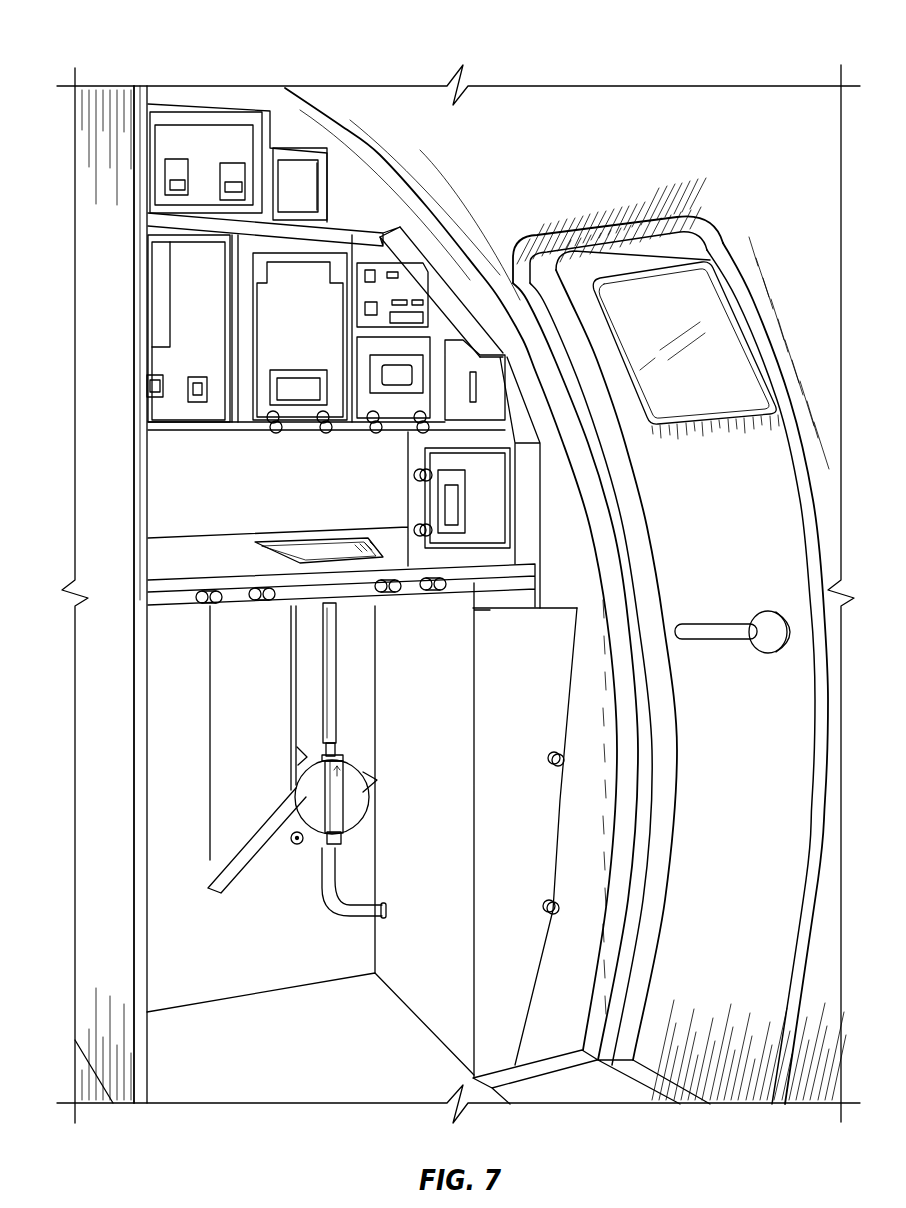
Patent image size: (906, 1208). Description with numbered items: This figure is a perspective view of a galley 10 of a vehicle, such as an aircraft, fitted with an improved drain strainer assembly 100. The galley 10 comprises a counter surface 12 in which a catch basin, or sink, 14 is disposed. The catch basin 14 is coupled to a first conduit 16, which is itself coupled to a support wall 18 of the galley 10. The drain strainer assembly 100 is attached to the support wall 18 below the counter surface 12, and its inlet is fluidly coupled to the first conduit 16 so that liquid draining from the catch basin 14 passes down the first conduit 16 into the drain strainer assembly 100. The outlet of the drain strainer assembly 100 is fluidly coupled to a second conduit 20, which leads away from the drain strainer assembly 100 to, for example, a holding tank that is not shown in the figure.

The galley 10 is at (129, 54).
The counter surface 12 is at (200, 552).
The catch basin 14 is at (303, 547).
The first conduit 16 is at (337, 625).
The support wall 18 is at (250, 968).
The second conduit 20 is at (323, 858).
The drain strainer assembly 100 is at (355, 795).